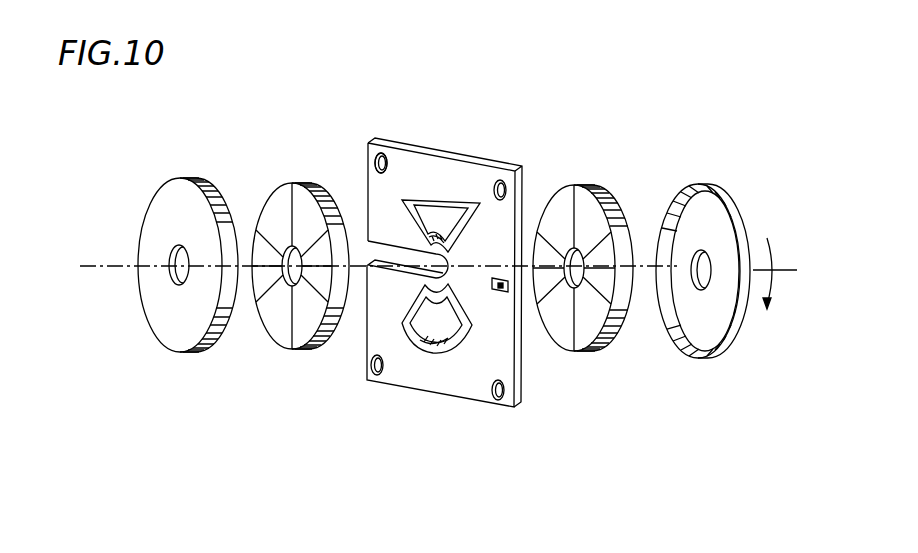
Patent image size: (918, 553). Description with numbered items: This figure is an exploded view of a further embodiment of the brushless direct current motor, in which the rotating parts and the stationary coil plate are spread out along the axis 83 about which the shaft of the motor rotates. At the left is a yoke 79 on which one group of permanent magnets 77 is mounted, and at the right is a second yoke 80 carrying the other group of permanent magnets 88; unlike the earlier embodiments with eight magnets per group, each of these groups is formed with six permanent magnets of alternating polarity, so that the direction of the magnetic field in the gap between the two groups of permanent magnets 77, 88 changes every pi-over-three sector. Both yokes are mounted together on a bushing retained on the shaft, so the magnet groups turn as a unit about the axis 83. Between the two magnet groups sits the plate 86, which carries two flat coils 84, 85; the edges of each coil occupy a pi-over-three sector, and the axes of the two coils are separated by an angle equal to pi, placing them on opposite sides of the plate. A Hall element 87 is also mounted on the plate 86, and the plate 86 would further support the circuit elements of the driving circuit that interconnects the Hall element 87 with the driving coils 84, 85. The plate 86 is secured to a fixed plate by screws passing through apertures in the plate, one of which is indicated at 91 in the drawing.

The yoke 79 is at (188, 178).
The group of permanent magnets 77 is at (300, 184).
The axis 83 is at (102, 266).
The plate 86 is at (375, 332).
The mounting hole 91 is at (383, 152).
The flat coil 84 is at (443, 196).
The flat coil 85 is at (433, 353).
The Hall element 87 is at (497, 292).
The group of permanent magnets 88 is at (578, 186).
The yoke 80 is at (702, 185).